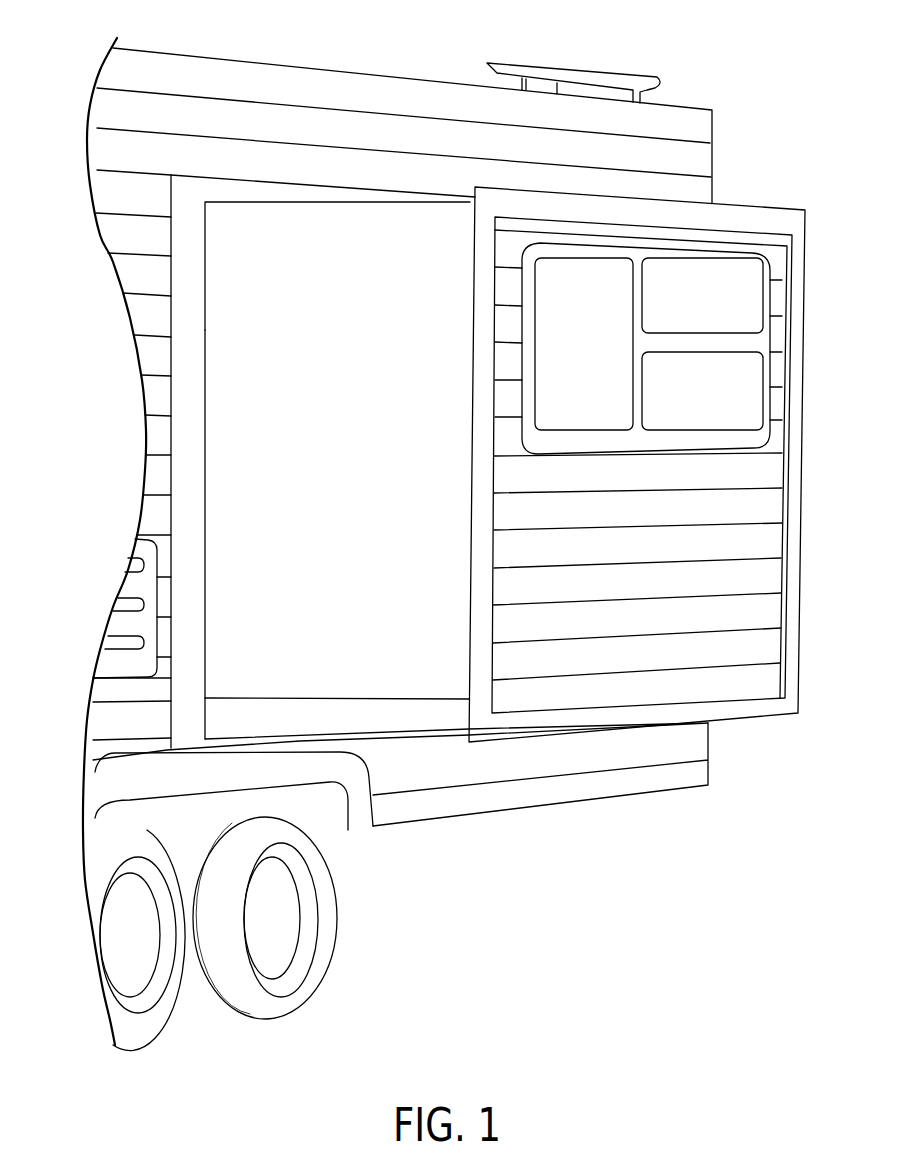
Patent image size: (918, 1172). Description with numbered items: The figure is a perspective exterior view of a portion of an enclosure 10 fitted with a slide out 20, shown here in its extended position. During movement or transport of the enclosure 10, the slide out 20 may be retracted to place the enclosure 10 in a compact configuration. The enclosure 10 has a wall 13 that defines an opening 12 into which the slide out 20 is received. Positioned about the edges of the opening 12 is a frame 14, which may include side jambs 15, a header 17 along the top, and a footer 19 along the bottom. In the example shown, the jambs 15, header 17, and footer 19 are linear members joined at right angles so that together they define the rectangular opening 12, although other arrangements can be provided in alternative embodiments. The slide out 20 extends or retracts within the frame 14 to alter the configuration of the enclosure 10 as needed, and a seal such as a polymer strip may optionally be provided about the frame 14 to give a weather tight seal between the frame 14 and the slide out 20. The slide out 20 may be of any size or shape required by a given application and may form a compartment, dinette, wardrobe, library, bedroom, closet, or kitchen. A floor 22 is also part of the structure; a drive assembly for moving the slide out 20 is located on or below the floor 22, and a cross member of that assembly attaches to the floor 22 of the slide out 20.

The enclosure 10 is at (349, 97).
The opening 12 is at (202, 302).
The wall 13 is at (137, 208).
The frame 14 is at (193, 413).
The side jambs 15 is at (193, 358).
The header 17 is at (246, 191).
The footer 19 is at (248, 736).
The slide out 20 is at (447, 370).
The floor 22 is at (348, 706).